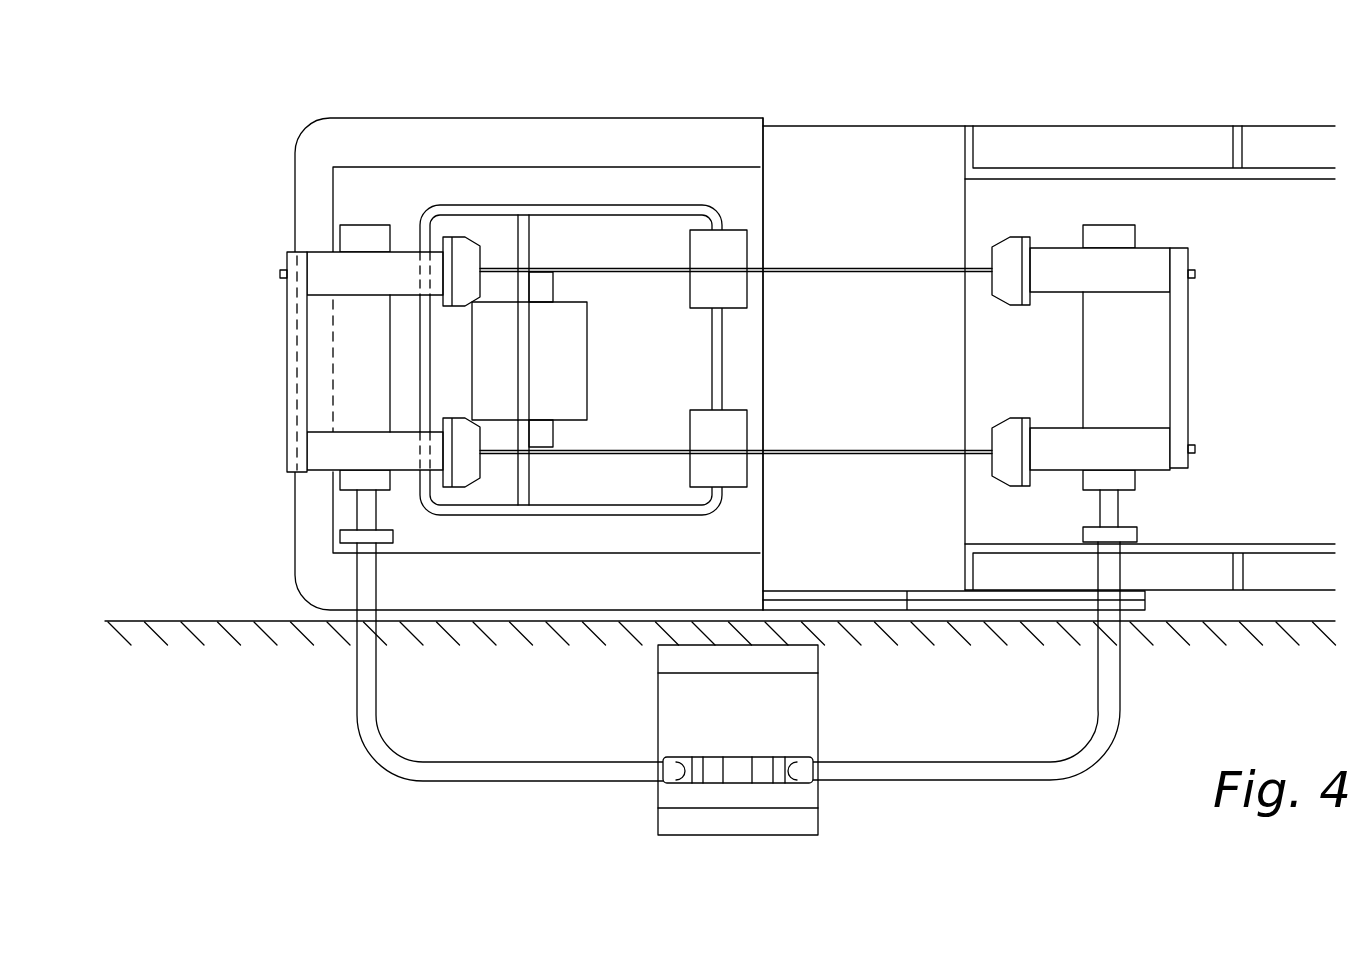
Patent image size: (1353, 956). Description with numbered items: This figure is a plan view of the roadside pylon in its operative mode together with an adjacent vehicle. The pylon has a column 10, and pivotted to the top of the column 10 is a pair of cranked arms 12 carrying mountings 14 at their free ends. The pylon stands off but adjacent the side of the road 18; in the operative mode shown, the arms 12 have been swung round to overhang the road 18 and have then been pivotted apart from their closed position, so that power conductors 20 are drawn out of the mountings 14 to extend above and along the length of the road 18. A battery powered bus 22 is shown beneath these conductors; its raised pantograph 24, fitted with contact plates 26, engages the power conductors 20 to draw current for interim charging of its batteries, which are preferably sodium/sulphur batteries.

The column 10 is at (820, 712).
The cranked arms 12 is at (1083, 763).
The mountings 14 is at (1188, 380).
The road 18 is at (1293, 496).
The power conductors 20 is at (837, 268).
The battery powered bus 22 is at (670, 118).
The pantograph 24 is at (543, 205).
The contact plates 26 is at (745, 228).